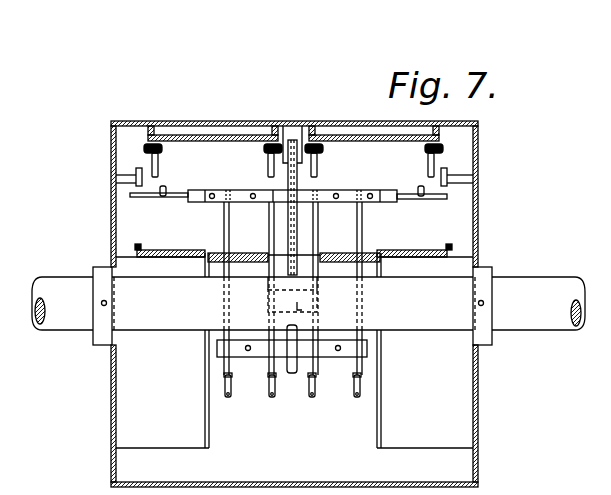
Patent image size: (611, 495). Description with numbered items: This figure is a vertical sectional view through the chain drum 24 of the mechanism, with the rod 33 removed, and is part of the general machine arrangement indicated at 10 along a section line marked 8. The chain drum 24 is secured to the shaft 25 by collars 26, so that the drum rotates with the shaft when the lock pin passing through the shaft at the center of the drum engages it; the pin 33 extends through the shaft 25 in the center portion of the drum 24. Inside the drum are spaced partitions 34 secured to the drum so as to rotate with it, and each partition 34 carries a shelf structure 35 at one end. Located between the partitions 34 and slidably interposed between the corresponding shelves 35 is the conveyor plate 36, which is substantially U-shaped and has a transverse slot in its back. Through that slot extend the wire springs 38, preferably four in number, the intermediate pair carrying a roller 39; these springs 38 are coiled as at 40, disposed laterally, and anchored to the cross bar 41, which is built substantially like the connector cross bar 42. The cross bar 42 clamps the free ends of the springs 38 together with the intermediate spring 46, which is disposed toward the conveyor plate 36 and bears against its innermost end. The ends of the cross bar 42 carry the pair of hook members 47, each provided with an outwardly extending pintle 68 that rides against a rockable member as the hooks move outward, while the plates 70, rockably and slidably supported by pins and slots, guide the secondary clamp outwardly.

The section line 8 is at (293, 494).
The machine 10 is at (0, 480).
The chain drum 24 is at (480, 212).
The shaft 25 is at (48, 277).
The collars 26 is at (103, 267).
The pin 33 is at (280, 277).
The spaced partitions 34 is at (207, 418).
The shelf structure 35 is at (172, 250).
The conveyor plate 36 is at (247, 253).
The wire springs 38 is at (360, 248).
The roller 39 is at (318, 305).
The coils 40 is at (232, 398).
The cross bar 41 is at (292, 378).
The cross bar 42 is at (348, 188).
The intermediate spring 46 is at (285, 212).
The hook members 47 is at (164, 199).
The pintle 68 is at (130, 195).
The plates 70 is at (200, 140).